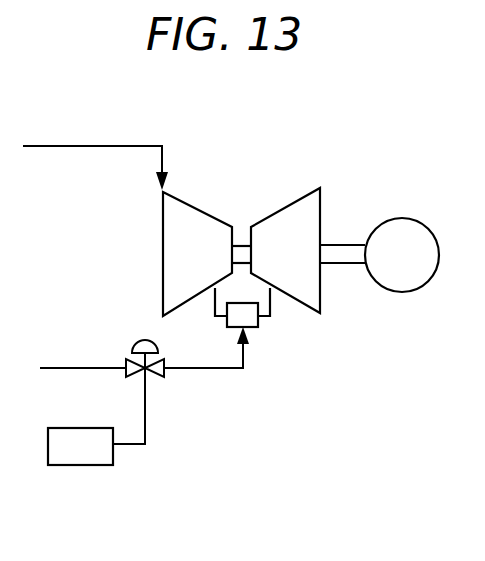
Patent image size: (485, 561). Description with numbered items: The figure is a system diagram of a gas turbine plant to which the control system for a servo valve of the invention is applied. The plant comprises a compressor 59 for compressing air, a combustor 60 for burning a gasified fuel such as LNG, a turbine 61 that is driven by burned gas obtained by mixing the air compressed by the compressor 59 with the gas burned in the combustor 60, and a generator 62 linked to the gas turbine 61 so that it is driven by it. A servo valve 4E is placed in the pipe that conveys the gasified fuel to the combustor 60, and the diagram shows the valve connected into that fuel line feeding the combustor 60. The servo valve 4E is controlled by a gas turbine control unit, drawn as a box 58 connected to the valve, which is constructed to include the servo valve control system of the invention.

The compressor 59 is at (186, 212).
The turbine 61 is at (287, 218).
The generator 62 is at (408, 230).
The combustor 60 is at (255, 329).
The servo valve 4E is at (138, 343).
The controller 58 is at (85, 461).